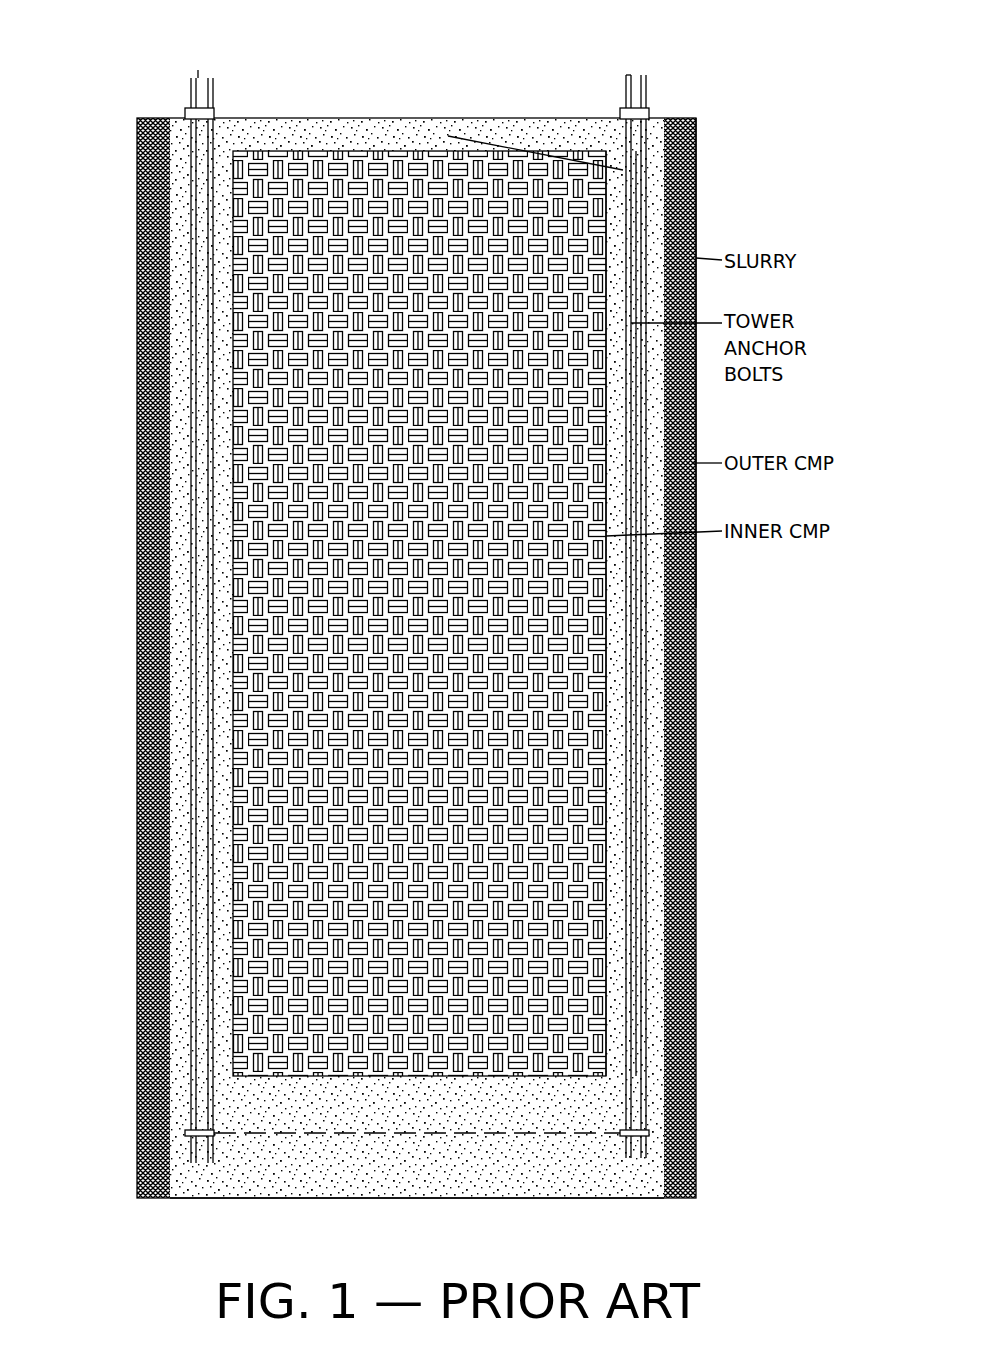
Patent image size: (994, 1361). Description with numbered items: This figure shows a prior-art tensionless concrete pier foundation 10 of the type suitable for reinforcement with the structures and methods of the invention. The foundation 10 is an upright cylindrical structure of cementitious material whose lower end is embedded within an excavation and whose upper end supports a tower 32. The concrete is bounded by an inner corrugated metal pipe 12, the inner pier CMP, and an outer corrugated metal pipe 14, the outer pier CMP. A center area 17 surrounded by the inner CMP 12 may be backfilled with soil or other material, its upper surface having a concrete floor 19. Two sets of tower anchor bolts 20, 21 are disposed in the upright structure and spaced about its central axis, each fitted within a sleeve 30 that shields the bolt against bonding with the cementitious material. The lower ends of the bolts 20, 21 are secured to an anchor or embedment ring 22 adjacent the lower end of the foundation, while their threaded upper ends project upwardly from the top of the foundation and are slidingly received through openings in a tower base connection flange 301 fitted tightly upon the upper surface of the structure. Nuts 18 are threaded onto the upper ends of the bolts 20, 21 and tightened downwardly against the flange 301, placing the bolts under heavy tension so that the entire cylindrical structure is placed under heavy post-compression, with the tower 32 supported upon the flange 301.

The concrete pier foundation 10 is at (92, 146).
The tower base connection flange 301 is at (203, 104).
The tower 32 is at (625, 66).
The tower anchor bolt 21 is at (615, 69).
The tower anchor bolt 20 is at (640, 70).
The nut 18 is at (641, 100).
The concrete floor 19 is at (688, 178).
The sleeve 30 is at (634, 663).
The outer corrugated metal pipe 14 is at (684, 866).
The inner corrugated metal pipe 12 is at (597, 1020).
The embedment ring 22 is at (640, 1121).
The center area 17 is at (463, 1068).